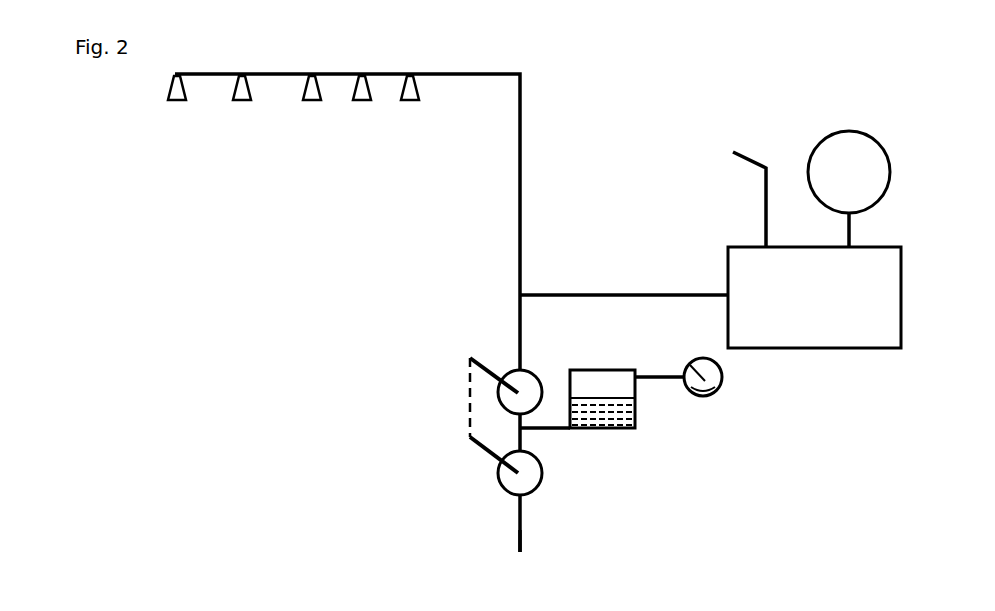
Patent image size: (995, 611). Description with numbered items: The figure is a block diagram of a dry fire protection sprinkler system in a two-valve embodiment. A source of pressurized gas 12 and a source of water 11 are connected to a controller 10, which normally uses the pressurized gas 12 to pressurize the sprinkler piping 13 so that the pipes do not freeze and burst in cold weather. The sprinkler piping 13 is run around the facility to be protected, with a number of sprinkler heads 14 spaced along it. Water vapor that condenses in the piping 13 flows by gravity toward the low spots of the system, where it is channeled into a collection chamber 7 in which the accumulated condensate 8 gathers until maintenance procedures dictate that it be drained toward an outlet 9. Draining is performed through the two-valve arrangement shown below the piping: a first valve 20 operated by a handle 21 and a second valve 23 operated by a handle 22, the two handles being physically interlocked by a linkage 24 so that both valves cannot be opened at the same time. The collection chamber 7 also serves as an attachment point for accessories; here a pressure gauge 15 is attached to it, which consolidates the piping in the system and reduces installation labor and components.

The collection chamber 7 is at (615, 368).
The condensate 8 is at (620, 422).
The outlet pipe 9 is at (520, 552).
The controller 10 is at (814, 297).
The water 11 is at (738, 187).
The pressurized gas 12 is at (846, 163).
The sprinkler piping 13 is at (522, 181).
The sprinkler heads 14 is at (236, 107).
The pressure gauge 15 is at (685, 360).
The first valve 20 is at (510, 372).
The first valve handle 21 is at (470, 358).
The second valve handle 22 is at (483, 452).
The second valve 23 is at (505, 495).
The linkage 24 is at (465, 397).